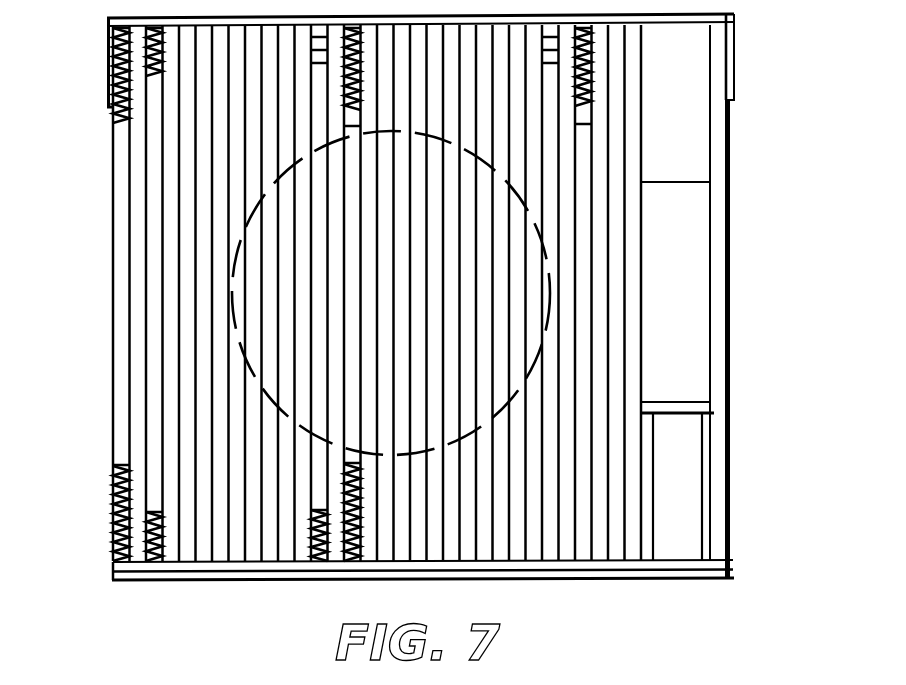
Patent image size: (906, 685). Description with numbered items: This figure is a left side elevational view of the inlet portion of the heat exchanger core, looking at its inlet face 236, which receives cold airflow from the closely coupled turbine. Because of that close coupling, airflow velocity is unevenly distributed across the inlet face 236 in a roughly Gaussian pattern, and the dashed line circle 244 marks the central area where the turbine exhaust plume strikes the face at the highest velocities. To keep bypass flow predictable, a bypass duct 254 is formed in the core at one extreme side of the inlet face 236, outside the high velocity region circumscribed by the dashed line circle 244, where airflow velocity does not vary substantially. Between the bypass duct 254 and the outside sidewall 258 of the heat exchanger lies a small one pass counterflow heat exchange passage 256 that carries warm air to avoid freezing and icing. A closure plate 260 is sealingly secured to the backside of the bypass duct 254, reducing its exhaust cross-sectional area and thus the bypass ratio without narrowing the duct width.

The inlet face 236 is at (150, 267).
The dashed line circle 244 is at (287, 413).
The bypass duct 254 is at (690, 278).
The one pass counterflow heat exchange passage 256 is at (725, 166).
The outside sidewall 258 is at (733, 462).
The closure plate 260 is at (700, 126).